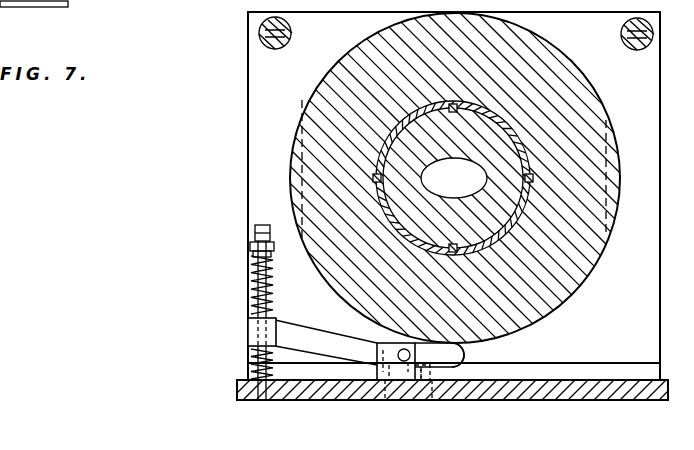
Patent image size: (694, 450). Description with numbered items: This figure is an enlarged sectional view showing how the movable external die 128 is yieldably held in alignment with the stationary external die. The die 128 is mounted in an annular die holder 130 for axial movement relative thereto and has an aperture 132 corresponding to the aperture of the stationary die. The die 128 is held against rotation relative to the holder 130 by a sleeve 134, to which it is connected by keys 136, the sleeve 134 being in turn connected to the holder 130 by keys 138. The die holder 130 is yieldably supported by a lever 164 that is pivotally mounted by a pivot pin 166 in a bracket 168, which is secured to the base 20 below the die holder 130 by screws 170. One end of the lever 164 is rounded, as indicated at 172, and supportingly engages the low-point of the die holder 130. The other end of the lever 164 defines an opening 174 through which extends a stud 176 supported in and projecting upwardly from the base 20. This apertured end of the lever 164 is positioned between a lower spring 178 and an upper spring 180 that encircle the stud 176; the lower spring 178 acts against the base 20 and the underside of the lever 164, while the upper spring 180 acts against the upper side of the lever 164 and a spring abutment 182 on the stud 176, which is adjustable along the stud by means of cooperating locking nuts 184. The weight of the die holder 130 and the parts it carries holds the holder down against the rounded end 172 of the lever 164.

The base 20 is at (583, 393).
The movable external die 128 is at (484, 231).
The annular die holder 130 is at (556, 304).
The aperture 132 is at (454, 178).
The sleeve 134 is at (524, 141).
The keys 136 is at (458, 107).
The keys 138 is at (373, 181).
The lever 164 is at (333, 333).
The pivot pin 166 is at (388, 372).
The bracket 168 is at (403, 362).
The screws 170 is at (377, 356).
The rounded end 172 is at (470, 346).
The opening 174 is at (248, 331).
The stud 176 is at (273, 297).
The lower spring 178 is at (250, 364).
The upper spring 180 is at (250, 275).
The spring abutment 182 is at (251, 248).
The locking nuts 184 is at (255, 236).